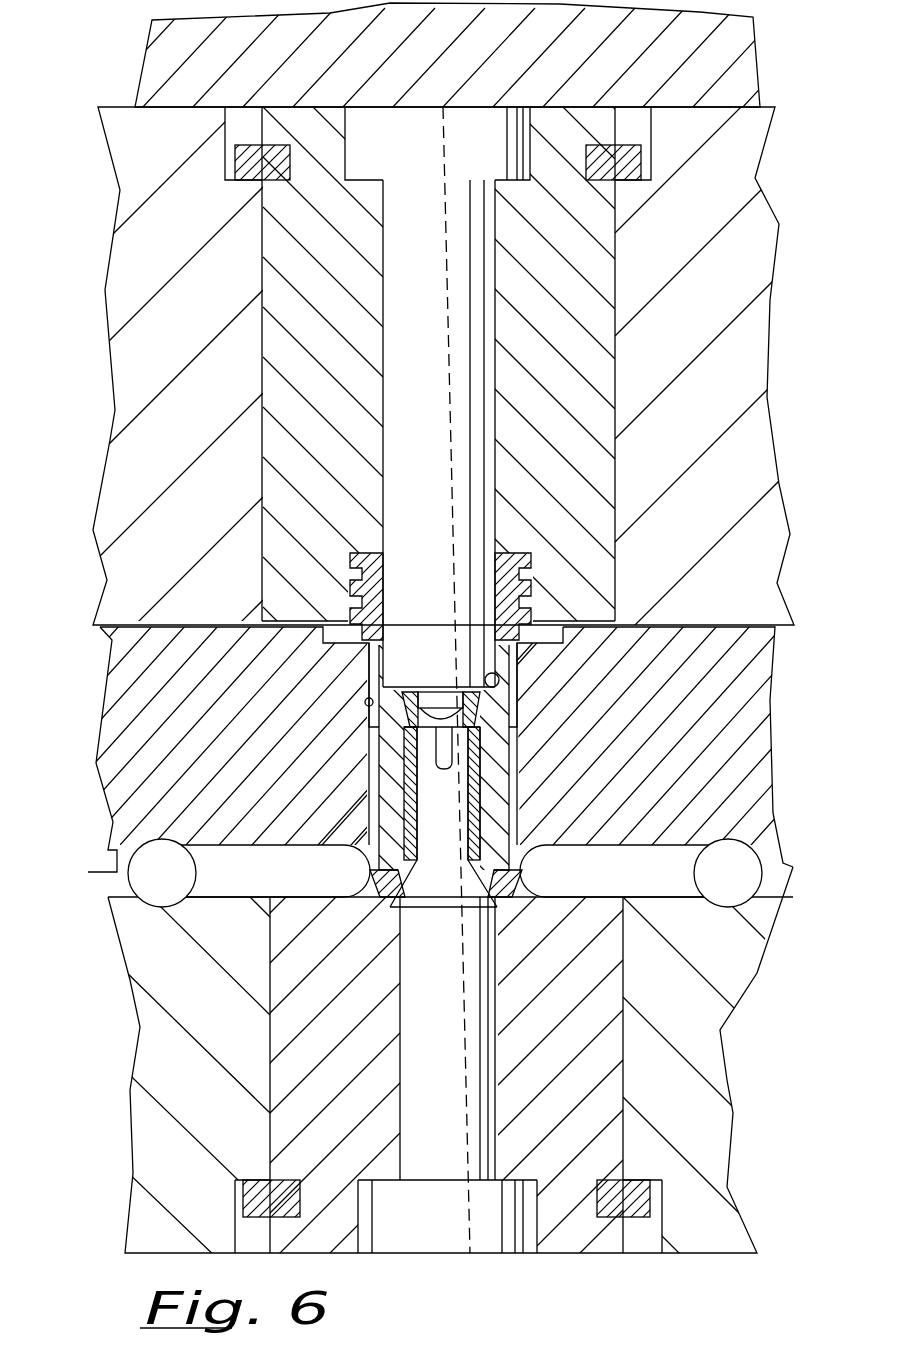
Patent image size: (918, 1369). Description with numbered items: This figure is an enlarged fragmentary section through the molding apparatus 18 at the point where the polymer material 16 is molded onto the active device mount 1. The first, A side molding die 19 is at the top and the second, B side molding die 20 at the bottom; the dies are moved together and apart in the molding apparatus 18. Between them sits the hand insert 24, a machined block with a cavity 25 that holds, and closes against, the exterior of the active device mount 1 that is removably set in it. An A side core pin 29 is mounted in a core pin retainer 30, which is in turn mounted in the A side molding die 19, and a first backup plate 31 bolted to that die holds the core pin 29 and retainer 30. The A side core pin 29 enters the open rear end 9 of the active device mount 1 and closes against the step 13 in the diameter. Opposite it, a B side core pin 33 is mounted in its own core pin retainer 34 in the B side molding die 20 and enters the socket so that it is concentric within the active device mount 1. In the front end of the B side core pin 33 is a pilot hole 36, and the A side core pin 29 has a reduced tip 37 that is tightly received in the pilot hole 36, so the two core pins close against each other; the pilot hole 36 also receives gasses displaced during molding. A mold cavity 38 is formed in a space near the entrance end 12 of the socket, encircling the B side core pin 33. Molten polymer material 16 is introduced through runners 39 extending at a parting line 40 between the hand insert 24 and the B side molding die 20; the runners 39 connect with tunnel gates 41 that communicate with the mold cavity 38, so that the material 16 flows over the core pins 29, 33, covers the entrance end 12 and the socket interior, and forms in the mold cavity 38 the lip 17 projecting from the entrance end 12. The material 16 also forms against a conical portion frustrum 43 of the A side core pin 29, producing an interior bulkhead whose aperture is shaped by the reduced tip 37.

The active device mount 1 is at (368, 765).
The open rear end 9 is at (365, 553).
The entrance end 12 is at (390, 897).
The step in the diameter 13 is at (498, 680).
The material 16 is at (482, 818).
The lip 17 is at (425, 897).
The molding apparatus 18 is at (100, 432).
The A side molding die 19 is at (718, 165).
The B side molding die 20 is at (693, 1228).
The hand insert 24 is at (118, 682).
The cavity 25 is at (366, 704).
The A side core pin 29 is at (426, 328).
The core pin retainer 30 is at (336, 341).
The first backup plate 31 is at (155, 62).
The B side core pin 33 is at (444, 1117).
The core pin retainer 34 is at (340, 1110).
The pilot hole 36 is at (505, 748).
The reduced tip 37 is at (430, 740).
The mold cavity 38 is at (472, 900).
The runners 39 is at (198, 866).
The parting line 40 is at (108, 893).
The tunnel gates 41 is at (355, 890).
The conical portion frustrum 43 is at (437, 727).